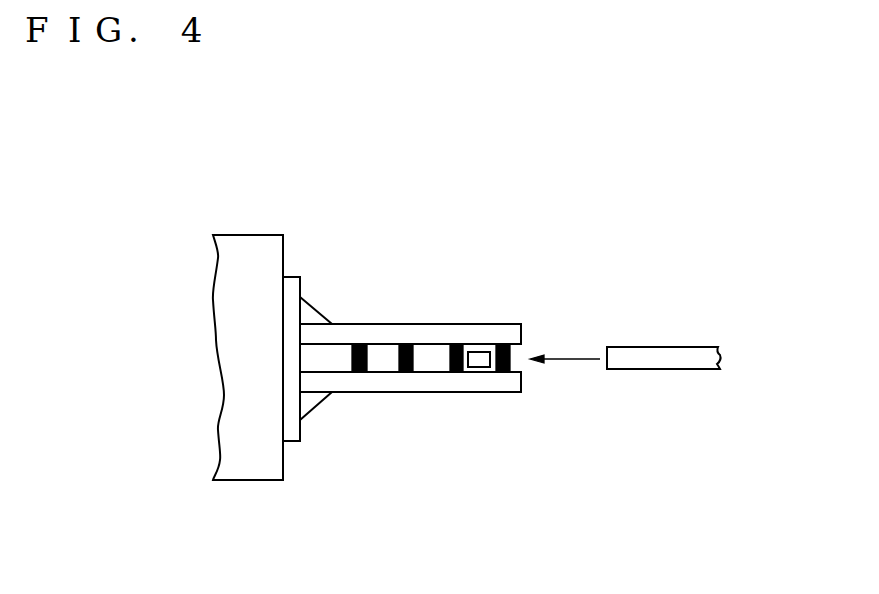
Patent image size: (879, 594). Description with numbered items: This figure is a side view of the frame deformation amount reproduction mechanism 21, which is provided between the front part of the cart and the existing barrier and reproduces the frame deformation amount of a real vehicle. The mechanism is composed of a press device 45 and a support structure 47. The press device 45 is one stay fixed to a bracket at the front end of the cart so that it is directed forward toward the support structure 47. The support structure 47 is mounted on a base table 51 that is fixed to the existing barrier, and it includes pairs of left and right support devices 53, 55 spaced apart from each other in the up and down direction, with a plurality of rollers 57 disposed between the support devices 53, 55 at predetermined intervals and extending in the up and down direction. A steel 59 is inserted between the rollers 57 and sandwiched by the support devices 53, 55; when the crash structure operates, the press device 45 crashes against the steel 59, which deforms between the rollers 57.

The frame deformation amount reproduction mechanism 21 is at (466, 240).
The press device 45 is at (670, 358).
The support structure 47 is at (367, 322).
The base table 51 is at (265, 247).
The support device 53 is at (406, 332).
The support device 55 is at (383, 385).
The roller 57 is at (503, 344).
The steel 59 is at (480, 362).